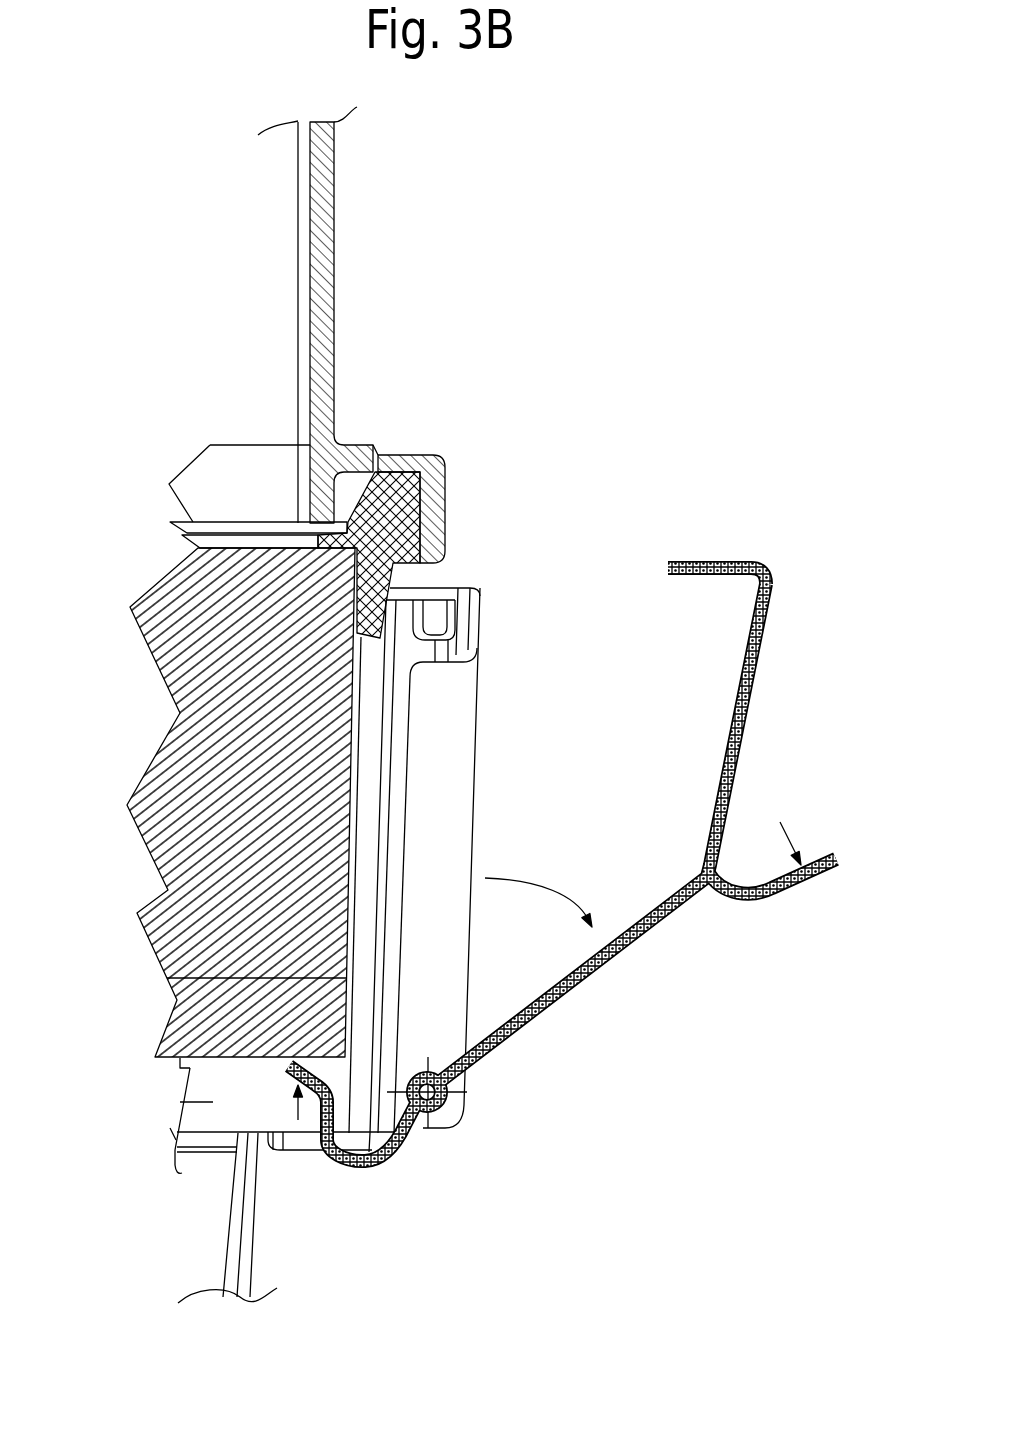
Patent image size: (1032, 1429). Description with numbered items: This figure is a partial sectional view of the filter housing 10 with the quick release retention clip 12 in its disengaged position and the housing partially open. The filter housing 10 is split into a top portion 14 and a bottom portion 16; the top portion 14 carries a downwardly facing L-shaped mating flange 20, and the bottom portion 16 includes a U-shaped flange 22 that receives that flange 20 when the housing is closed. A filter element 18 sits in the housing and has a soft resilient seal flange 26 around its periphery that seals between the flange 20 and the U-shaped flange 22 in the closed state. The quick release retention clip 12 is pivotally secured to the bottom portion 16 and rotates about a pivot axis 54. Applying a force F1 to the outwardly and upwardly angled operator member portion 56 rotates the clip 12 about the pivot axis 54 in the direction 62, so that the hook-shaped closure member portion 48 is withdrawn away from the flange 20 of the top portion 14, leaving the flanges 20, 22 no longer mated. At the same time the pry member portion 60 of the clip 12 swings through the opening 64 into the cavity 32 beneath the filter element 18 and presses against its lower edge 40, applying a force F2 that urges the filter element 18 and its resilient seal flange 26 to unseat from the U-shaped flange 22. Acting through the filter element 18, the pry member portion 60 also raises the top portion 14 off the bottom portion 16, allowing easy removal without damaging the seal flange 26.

The filter housing 10 is at (690, 261).
The quick release retention clip 12 is at (600, 835).
The top portion 14 is at (334, 218).
The bottom portion 16 is at (400, 785).
The filter element 18 is at (162, 758).
The mating flange 20 is at (440, 490).
The U-shaped flange 22 is at (472, 618).
The resilient seal flange 26 is at (402, 482).
The cavity 32 is at (176, 1087).
The lower edge 40 is at (282, 1064).
The hook-shaped closure member portion 48 is at (760, 565).
The pivot axis 54 is at (462, 1085).
The operator member portion 56 is at (827, 873).
The pry member portion 60 is at (290, 1079).
The direction of rotation 62 is at (553, 882).
The opening 64 is at (310, 1147).
The force F1 is at (780, 825).
The force F2 is at (297, 1118).